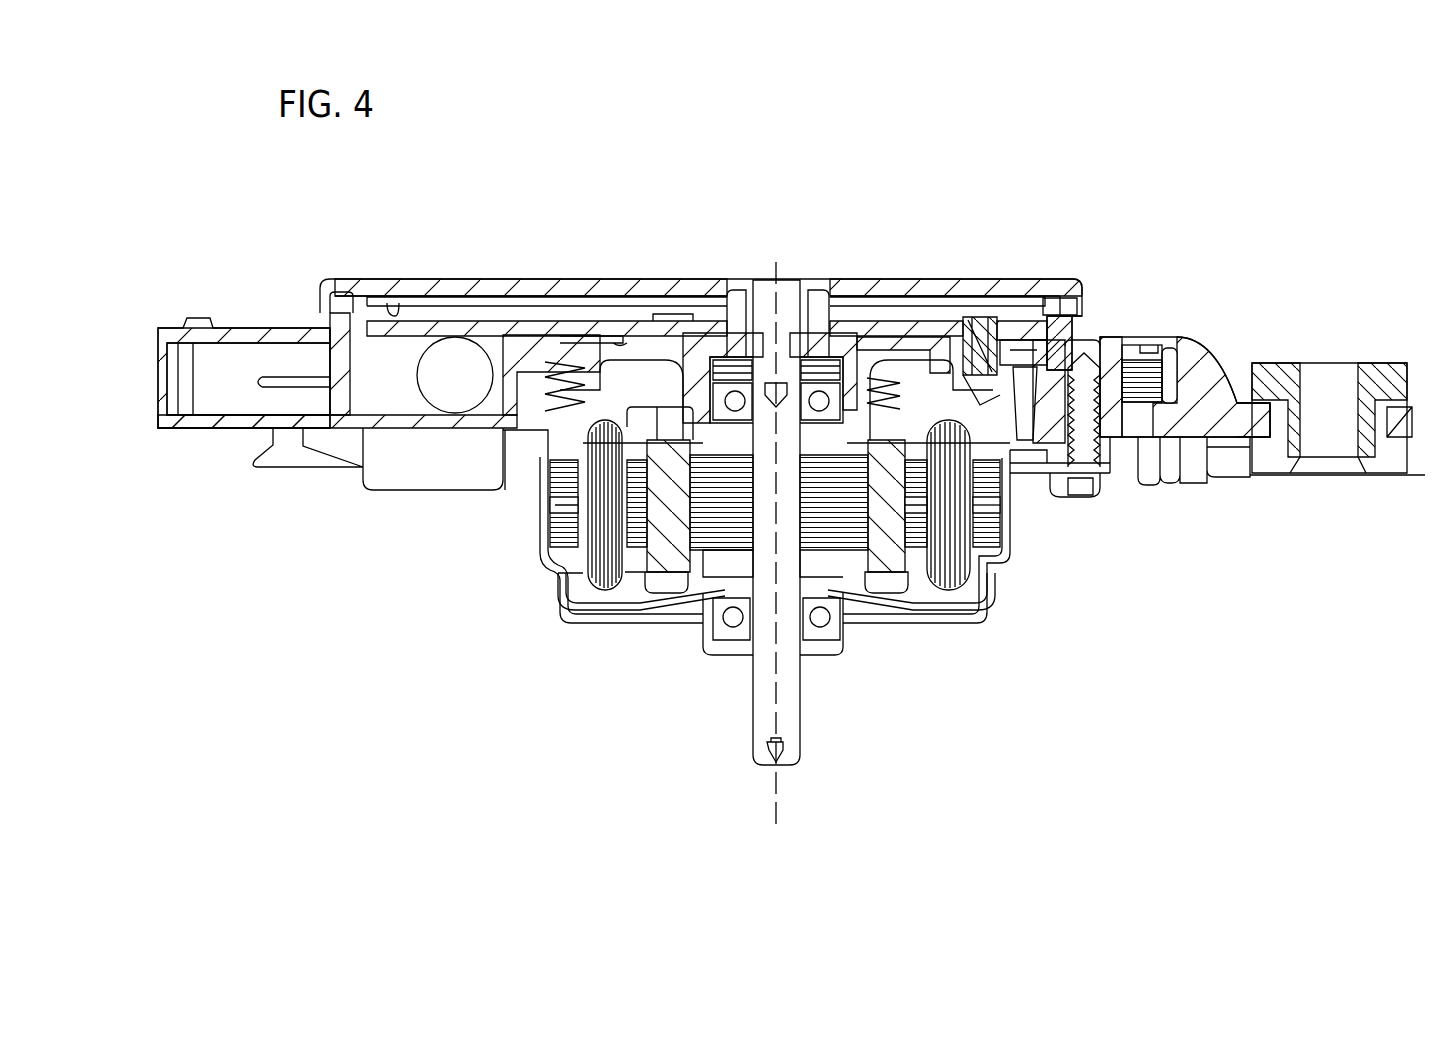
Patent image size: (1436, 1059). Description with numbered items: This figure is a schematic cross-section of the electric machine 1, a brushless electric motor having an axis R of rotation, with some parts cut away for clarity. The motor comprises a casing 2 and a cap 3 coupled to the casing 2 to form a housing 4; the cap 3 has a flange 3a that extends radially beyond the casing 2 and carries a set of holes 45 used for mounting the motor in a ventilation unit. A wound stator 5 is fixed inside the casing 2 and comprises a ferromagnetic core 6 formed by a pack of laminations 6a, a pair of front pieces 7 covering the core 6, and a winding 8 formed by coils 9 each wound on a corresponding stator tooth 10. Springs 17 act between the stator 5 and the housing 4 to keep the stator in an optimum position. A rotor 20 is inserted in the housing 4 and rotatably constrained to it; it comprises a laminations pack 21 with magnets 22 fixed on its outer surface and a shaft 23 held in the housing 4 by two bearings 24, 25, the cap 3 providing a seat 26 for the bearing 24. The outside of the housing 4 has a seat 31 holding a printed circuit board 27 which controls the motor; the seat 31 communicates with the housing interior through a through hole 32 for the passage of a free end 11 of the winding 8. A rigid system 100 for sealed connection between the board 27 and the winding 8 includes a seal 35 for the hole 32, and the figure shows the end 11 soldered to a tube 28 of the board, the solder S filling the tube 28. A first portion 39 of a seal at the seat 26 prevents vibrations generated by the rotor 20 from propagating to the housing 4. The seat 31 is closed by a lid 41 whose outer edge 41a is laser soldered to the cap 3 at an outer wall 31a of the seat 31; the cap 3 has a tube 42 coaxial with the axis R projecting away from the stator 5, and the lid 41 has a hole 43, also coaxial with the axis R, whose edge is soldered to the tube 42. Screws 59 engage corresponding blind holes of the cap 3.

The electric machine 1 is at (810, 186).
The casing 2 is at (540, 567).
The cap 3 is at (1099, 322).
The flange 3a is at (1274, 360).
The housing 4 is at (1014, 553).
The wound stator 5 is at (997, 567).
The ferromagnetic core 6 is at (600, 592).
The laminations 6a is at (920, 625).
The front pieces 7 is at (560, 355).
The winding 8 is at (962, 603).
The coils 9 is at (567, 563).
The stator tooth 10 is at (548, 500).
The free end 11 is at (1082, 488).
The springs 17 is at (484, 298).
The rotor 20 is at (838, 570).
The laminations pack 21 is at (717, 530).
The magnets 22 is at (648, 312).
The shaft 23 is at (748, 742).
The bearing 24 is at (680, 398).
The bearing 25 is at (745, 640).
The seat 26 is at (845, 311).
The printed circuit board 27 is at (915, 343).
The tube 28 is at (972, 319).
The seat 31 is at (1030, 311).
The outer wall 31a is at (322, 311).
The through hole 32 is at (1020, 328).
The seal 35 is at (945, 343).
The first portion 39 is at (750, 311).
The closing lid 41 is at (850, 289).
The outer edge 41a is at (342, 291).
The tube 42 is at (722, 366).
The hole 43 is at (788, 292).
The holes 45 is at (1329, 378).
The screws 59 is at (1080, 493).
The rigid system 100 is at (1084, 380).
The axis of rotation R is at (776, 778).
The solder S is at (987, 328).